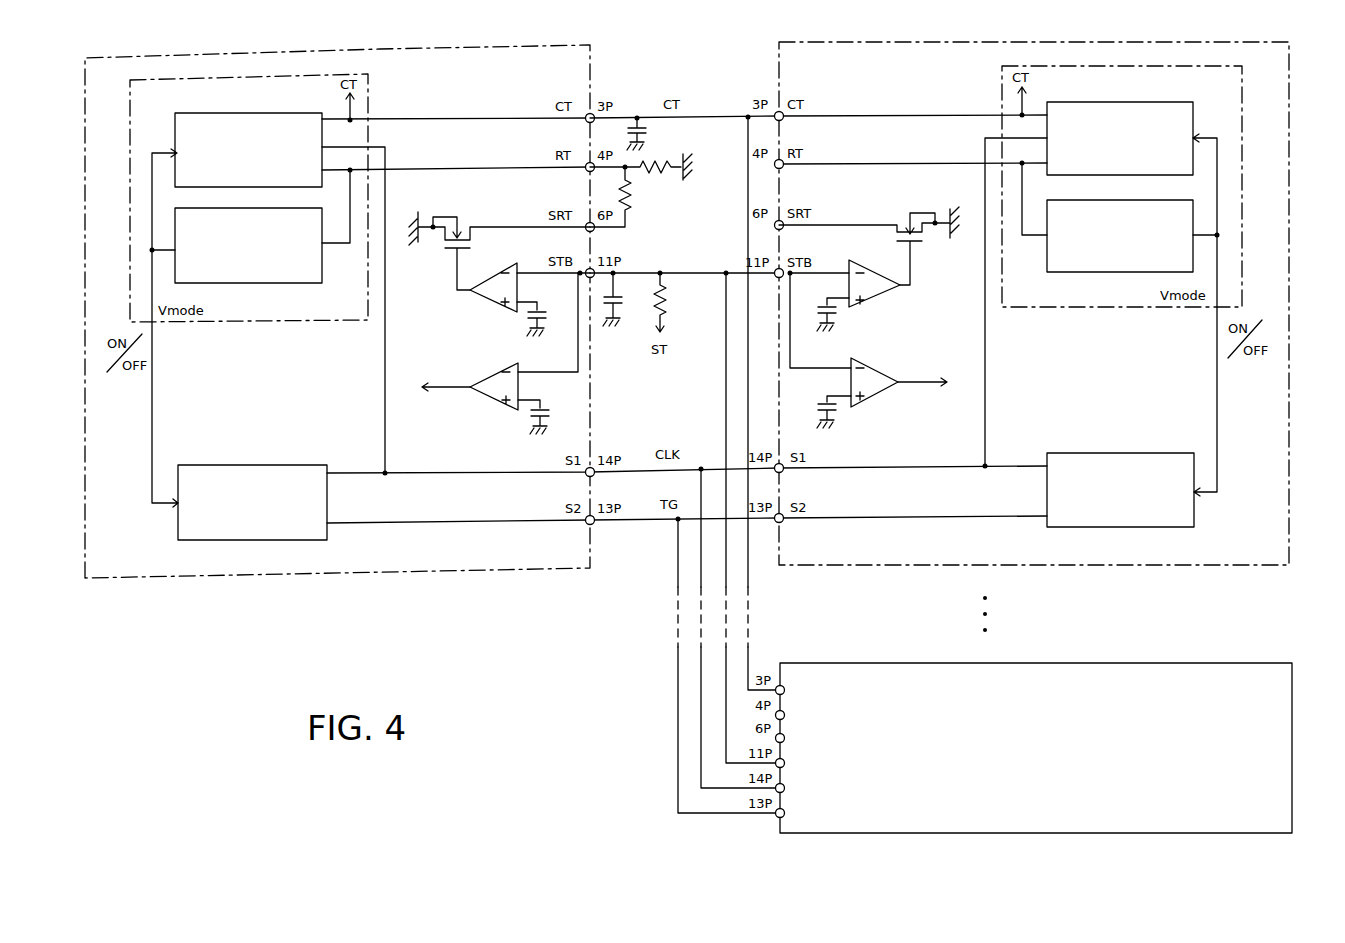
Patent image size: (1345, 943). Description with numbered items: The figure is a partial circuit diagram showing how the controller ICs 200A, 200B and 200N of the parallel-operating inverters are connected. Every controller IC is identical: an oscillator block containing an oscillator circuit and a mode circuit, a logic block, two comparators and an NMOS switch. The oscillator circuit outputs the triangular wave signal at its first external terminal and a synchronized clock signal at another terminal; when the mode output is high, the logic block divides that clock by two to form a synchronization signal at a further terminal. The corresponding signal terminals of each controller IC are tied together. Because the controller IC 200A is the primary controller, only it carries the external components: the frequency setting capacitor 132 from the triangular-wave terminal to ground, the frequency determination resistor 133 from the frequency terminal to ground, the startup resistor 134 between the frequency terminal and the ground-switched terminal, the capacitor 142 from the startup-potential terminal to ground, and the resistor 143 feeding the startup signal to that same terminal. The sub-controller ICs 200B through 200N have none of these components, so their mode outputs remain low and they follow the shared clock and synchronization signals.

The controller IC 200A is at (424, 48).
The controller IC 200B is at (902, 41).
The controller IC 200N is at (1162, 662).
The frequency setting capacitor 132 is at (652, 134).
The frequency determination resistor 133 is at (658, 174).
The startup resistor 134 is at (610, 197).
The capacitor 142 is at (623, 299).
The resistor 143 is at (677, 302).